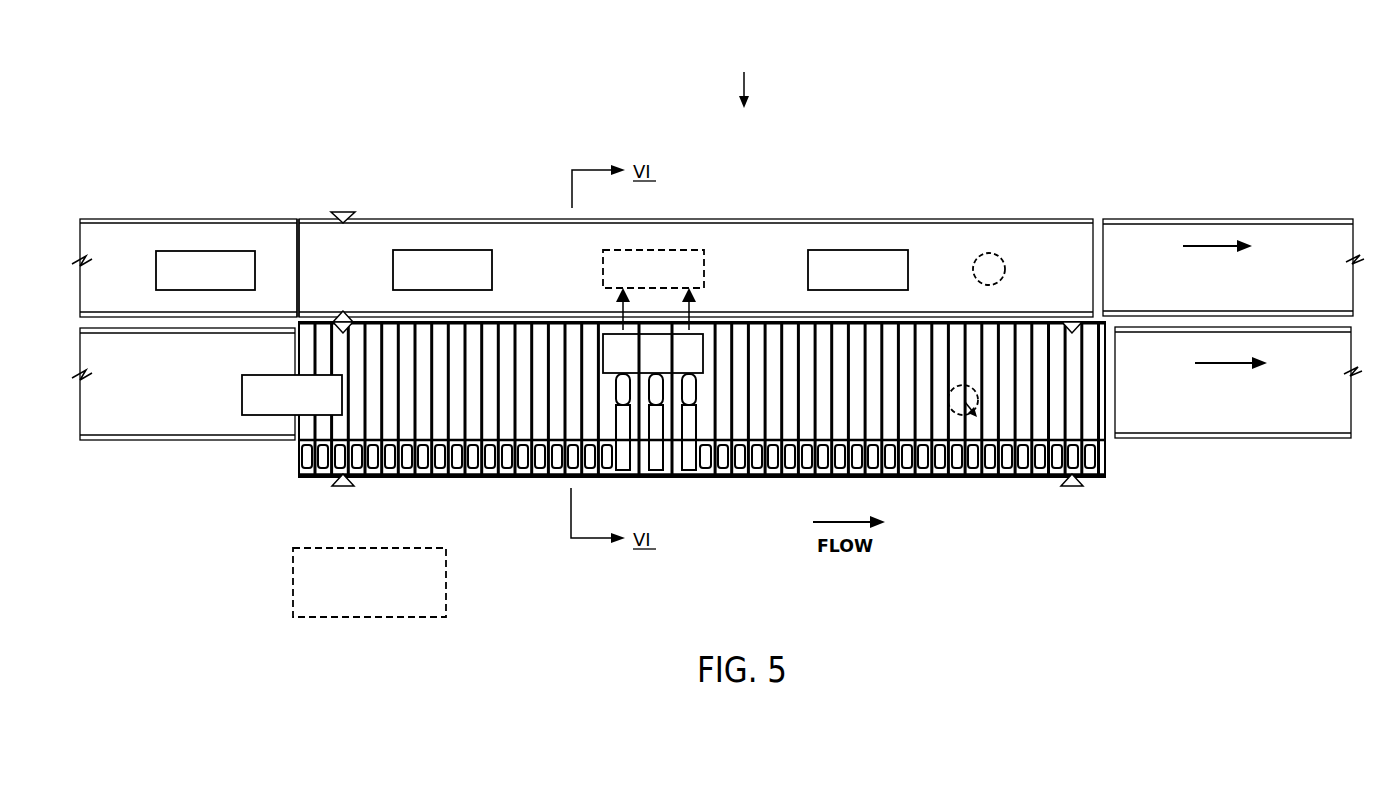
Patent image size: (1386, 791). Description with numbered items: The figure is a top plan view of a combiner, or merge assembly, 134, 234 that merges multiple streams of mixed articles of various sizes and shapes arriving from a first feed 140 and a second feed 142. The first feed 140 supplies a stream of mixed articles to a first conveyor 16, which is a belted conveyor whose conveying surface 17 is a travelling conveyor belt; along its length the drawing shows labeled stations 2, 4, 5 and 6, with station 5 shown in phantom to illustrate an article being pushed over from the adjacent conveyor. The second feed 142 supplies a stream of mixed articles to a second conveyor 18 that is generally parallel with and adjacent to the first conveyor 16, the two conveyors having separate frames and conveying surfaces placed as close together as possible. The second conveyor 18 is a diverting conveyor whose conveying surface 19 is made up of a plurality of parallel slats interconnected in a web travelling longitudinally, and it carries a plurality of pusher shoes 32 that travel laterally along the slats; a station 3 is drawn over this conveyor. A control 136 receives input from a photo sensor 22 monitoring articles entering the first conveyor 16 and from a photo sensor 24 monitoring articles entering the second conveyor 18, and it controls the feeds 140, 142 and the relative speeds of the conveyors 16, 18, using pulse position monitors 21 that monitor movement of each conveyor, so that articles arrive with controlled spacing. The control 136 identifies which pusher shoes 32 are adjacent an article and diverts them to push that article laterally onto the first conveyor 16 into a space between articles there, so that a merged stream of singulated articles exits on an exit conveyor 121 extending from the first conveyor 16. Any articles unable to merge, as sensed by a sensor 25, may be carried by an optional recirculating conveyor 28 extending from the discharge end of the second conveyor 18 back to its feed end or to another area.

The combiner 134 is at (736, 60).
The combiner 234 is at (787, 60).
The first feed 140 is at (133, 239).
The second feed 142 is at (153, 437).
The first conveyor 16 is at (313, 219).
The conveying surface 17 is at (362, 258).
The photo sensor 22 is at (343, 211).
The exit conveyor 121 is at (1148, 219).
The pulse position monitors 21 is at (992, 246).
The second conveyor 18 is at (455, 478).
The conveying surface 19 is at (527, 478).
The pusher shoes 32 is at (306, 456).
The photo sensor 24 is at (335, 484).
The sensor 25 is at (1069, 486).
The recirculating conveyor 28 is at (1180, 440).
The control 136 is at (447, 590).
The station 2 is at (205, 270).
The station 3 is at (292, 395).
The station 4 is at (442, 270).
The station 5 is at (653, 311).
The station 6 is at (858, 270).